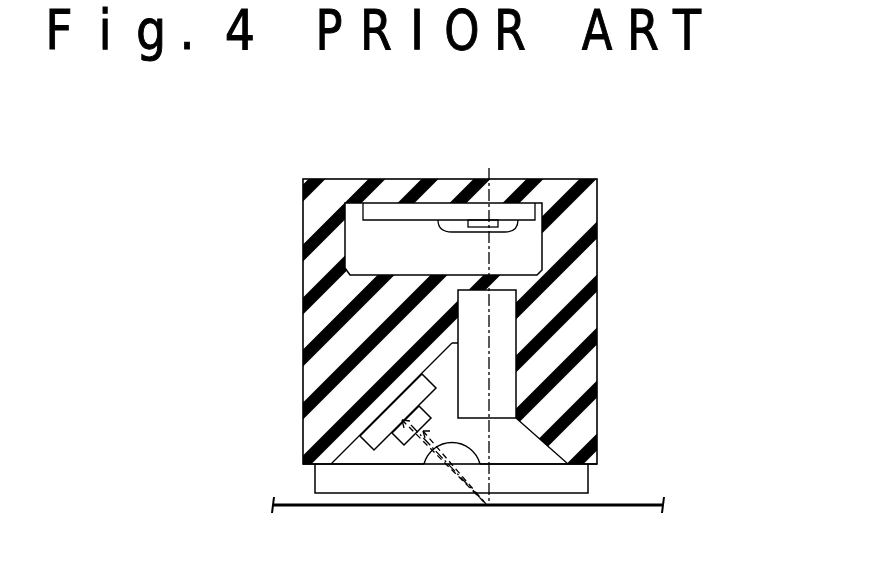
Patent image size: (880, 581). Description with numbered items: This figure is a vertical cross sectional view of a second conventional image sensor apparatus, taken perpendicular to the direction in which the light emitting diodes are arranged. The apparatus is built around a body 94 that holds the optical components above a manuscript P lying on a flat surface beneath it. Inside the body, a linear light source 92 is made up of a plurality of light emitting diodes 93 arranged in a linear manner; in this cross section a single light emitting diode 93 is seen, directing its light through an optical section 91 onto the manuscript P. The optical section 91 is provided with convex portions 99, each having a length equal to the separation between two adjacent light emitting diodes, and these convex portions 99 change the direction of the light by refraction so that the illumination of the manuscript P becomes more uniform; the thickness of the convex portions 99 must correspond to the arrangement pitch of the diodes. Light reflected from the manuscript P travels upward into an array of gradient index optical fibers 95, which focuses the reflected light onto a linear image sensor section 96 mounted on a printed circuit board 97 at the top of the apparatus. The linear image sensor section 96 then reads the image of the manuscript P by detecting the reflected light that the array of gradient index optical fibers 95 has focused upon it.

The optical section 91 is at (315, 483).
The linear light source 92 is at (364, 437).
The light emitting diodes 93 is at (391, 437).
The sensor housing 94 is at (598, 288).
The array of gradient index optical fibers 95 is at (507, 350).
The linear image sensor section 96 is at (472, 222).
The printed circuit board 97 is at (412, 212).
The convex portions 99 is at (446, 466).
The manuscript P is at (580, 507).